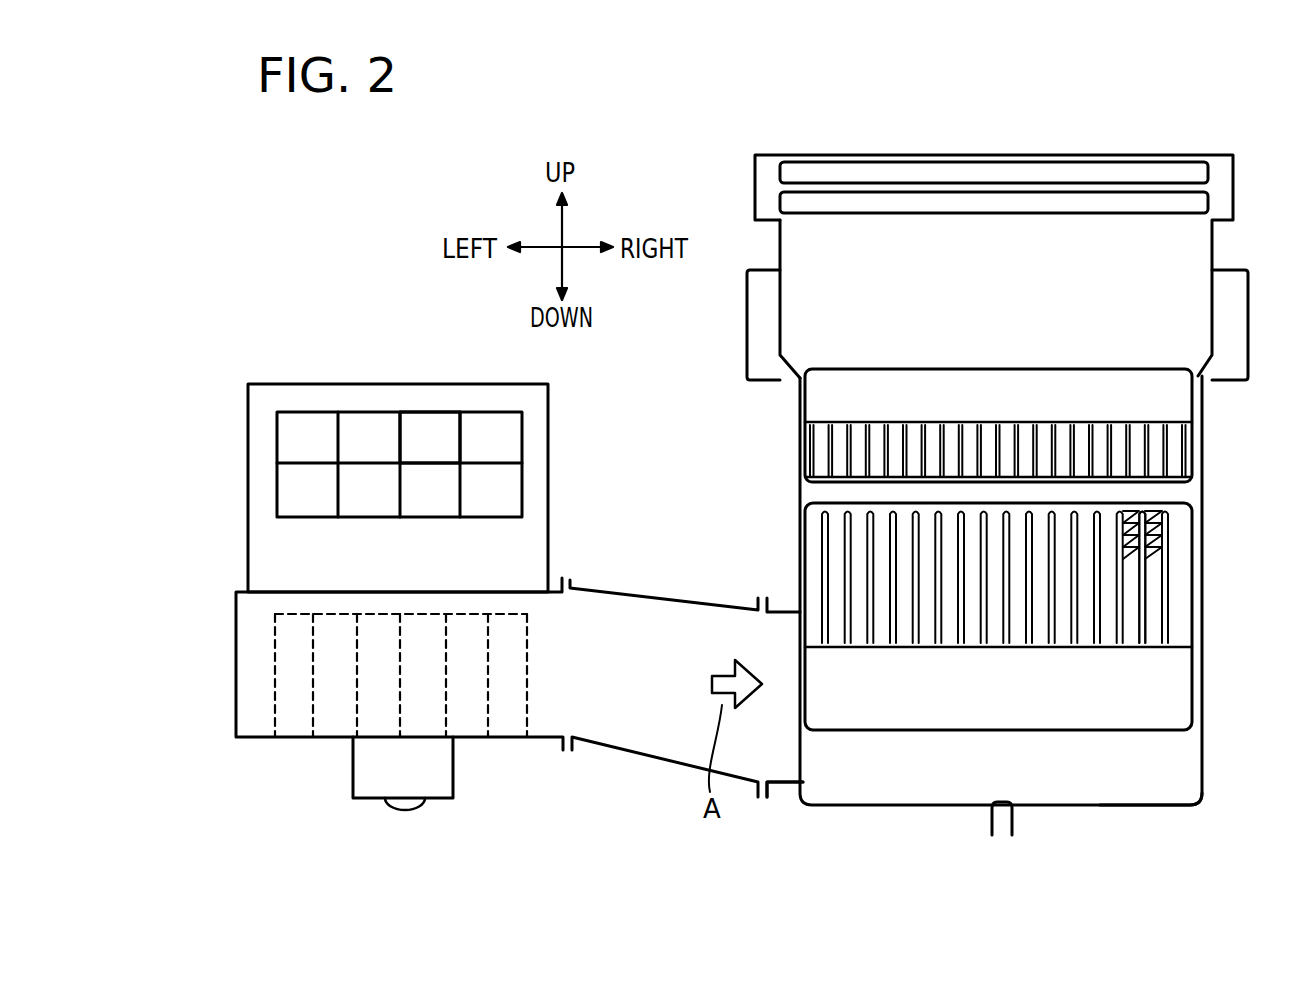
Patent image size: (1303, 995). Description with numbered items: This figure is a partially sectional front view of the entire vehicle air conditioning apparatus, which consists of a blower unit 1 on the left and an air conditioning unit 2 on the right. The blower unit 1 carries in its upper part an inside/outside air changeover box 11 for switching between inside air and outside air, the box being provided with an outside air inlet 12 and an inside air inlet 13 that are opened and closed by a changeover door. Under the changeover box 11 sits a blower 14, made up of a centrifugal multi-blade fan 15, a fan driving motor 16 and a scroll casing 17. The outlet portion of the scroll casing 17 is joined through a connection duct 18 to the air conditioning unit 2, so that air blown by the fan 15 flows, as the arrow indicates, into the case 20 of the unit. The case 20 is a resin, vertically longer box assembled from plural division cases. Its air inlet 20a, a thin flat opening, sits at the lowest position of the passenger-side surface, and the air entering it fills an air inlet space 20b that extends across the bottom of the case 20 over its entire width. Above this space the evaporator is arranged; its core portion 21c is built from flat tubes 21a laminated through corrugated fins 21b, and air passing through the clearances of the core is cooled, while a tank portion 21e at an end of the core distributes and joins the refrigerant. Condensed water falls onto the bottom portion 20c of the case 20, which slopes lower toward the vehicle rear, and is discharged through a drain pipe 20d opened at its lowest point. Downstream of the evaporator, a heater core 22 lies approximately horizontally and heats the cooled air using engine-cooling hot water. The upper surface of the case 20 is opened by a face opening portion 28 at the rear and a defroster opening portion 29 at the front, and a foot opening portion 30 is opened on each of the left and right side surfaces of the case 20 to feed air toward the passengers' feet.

The blower unit 1 is at (234, 571).
The air conditioning unit 2 is at (1210, 466).
The inside/outside air changeover box 11 is at (248, 455).
The outside air inlet 12 is at (323, 385).
The inside air inlet 13 is at (420, 428).
The blower 14 is at (231, 715).
The centrifugal multi-blade fan 15 is at (313, 700).
The fan driving motor 16 is at (450, 774).
The scroll casing 17 is at (236, 662).
The connection duct 18 is at (624, 750).
The case 20 is at (1202, 491).
The air inlet 20a is at (783, 785).
The air inlet space 20b is at (1125, 778).
The bottom portion 20c is at (1126, 808).
The drain pipe 20d is at (990, 818).
The tubes 21a is at (1120, 585).
The corrugated fins 21b is at (1157, 525).
The core portion 21c is at (1152, 598).
The tank portion 21e is at (1117, 688).
The heater core 22 is at (855, 453).
The face opening portion 28 is at (972, 205).
The defroster opening portion 29 is at (880, 175).
The foot opening portion 30 is at (748, 312).